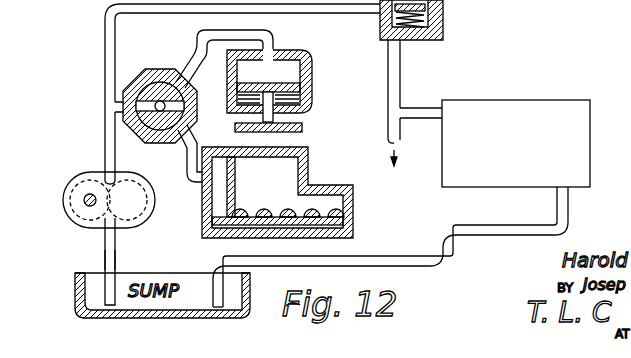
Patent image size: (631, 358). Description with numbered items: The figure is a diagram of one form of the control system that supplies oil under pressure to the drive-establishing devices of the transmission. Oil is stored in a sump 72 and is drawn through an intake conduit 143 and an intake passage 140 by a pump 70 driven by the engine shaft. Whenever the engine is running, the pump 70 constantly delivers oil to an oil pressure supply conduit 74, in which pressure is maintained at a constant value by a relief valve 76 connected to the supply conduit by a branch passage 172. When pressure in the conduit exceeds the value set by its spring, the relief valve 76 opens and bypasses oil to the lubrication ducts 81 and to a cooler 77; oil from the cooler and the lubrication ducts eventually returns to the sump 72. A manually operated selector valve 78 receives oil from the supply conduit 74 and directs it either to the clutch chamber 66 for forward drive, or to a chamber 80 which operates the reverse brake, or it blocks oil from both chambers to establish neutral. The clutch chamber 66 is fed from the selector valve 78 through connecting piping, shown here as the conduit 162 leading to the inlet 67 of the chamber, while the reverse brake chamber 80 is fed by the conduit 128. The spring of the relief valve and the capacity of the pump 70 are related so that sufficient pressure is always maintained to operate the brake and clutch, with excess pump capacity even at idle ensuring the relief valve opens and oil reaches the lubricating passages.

The clutch chamber 66 is at (205, 211).
The inlet pipe to tank 67 is at (189, 189).
The pump 70 is at (63, 197).
The sump 72 is at (248, 288).
The oil pressure supply conduit 74 is at (105, 137).
The relief valve 76 is at (410, 40).
The cooler 77 is at (590, 120).
The selector valve 78 is at (157, 69).
The chamber 80 is at (295, 72).
The lubrication ducts 81 is at (396, 124).
The pipe to control valve 128 is at (230, 28).
The intake passage 140 is at (113, 242).
The intake conduit 143 is at (105, 250).
The pump outlet pipe 162 is at (186, 158).
The branch passage 172 is at (330, 10).